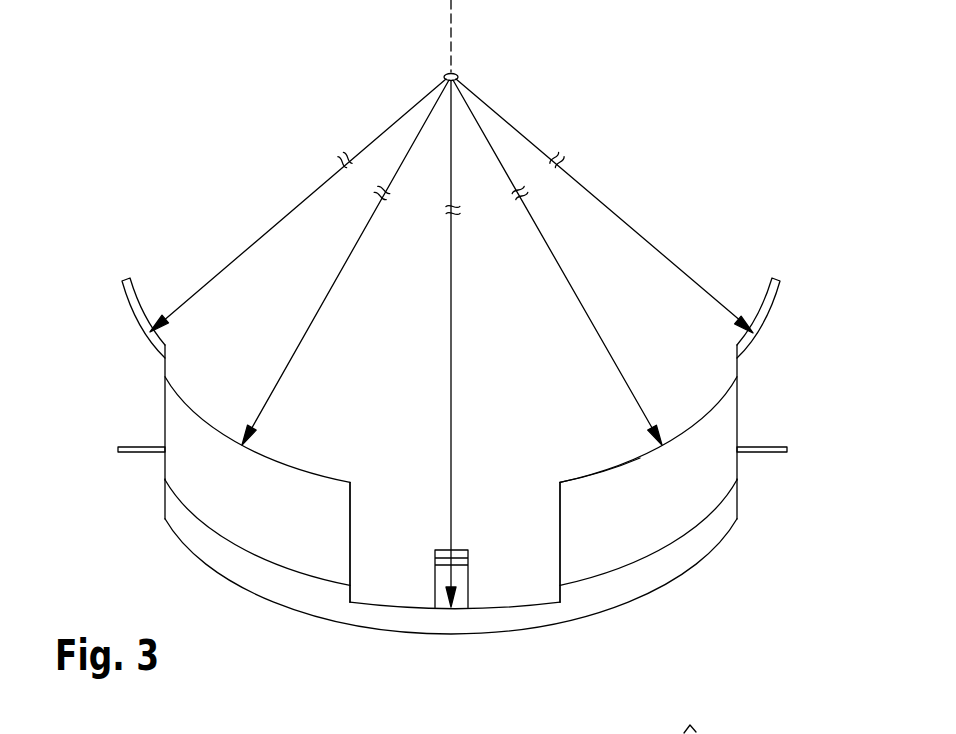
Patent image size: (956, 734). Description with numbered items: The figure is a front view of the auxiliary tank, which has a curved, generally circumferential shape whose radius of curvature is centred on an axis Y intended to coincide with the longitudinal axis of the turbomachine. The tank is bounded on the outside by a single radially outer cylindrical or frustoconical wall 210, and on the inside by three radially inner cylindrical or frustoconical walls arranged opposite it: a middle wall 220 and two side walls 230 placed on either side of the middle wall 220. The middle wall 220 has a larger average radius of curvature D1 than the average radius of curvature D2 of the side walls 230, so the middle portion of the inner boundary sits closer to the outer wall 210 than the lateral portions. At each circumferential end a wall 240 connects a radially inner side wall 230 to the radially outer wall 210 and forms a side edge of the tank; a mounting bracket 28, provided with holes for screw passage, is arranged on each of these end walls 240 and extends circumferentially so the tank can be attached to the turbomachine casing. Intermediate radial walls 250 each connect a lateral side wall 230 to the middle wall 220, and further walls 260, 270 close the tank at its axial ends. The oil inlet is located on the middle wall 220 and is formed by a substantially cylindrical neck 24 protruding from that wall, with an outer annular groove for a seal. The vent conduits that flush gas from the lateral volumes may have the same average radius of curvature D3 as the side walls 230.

The axis Y is at (459, 75).
The average radius of curvature of the middle wall D1 is at (455, 330).
The average radius of curvature of the side walls D2 is at (318, 309).
The average radius of curvature of the vent conduits D3 is at (243, 253).
The neck 24 is at (462, 577).
The mounting bracket 28 is at (118, 450).
The radially outer wall 210 is at (603, 613).
The middle wall 220 is at (404, 591).
The side wall 230 is at (207, 508).
The circumferential end wall 240 is at (163, 415).
The intermediate radial wall 250 is at (355, 505).
The axial end wall 260 is at (643, 580).
The axial end wall 270 is at (603, 462).